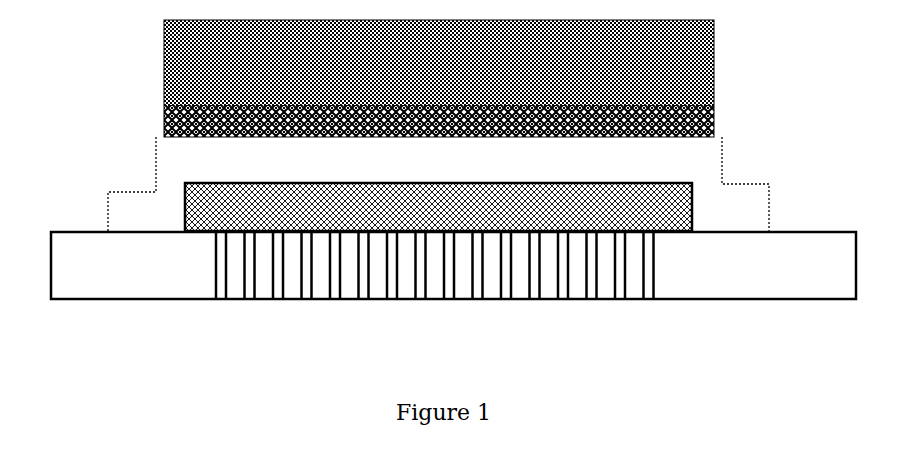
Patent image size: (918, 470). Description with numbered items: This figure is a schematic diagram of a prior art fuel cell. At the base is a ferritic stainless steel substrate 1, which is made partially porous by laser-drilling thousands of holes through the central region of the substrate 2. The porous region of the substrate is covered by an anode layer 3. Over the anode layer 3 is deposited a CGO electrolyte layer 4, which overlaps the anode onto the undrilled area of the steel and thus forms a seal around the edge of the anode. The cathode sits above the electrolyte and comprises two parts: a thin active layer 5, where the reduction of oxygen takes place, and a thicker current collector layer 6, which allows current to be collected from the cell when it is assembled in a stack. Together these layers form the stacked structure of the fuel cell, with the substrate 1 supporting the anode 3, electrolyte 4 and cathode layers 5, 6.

The ferritic stainless steel substrate 1 is at (453, 265).
The central region of the substrate 2 is at (300, 305).
The anode layer 3 is at (438, 207).
The CGO electrolyte layer 4 is at (148, 170).
The thin active layer 5 is at (152, 124).
The current collector layer 6 is at (439, 78).